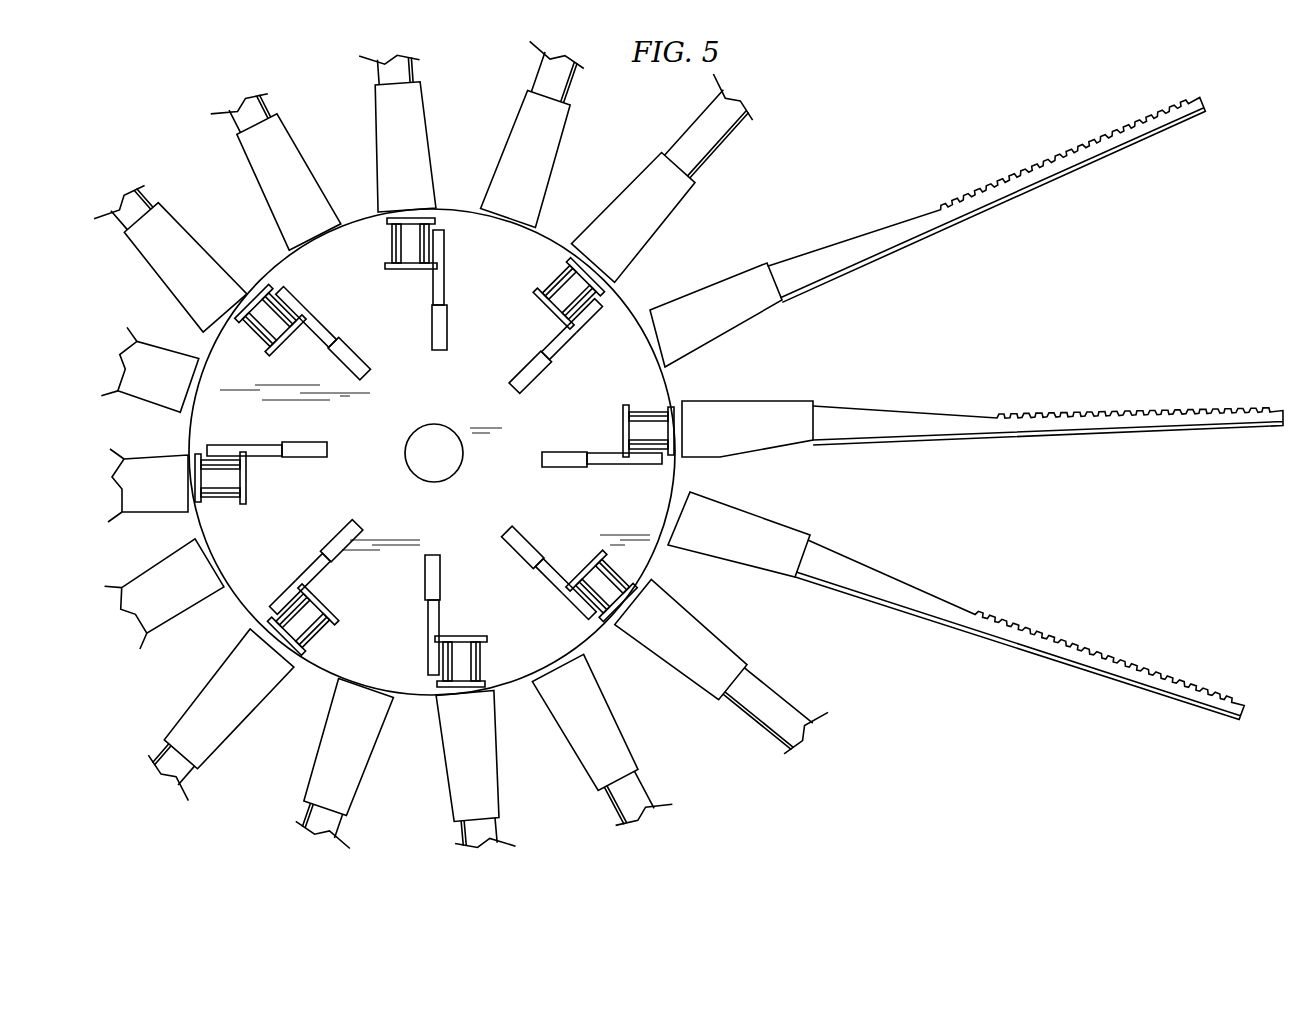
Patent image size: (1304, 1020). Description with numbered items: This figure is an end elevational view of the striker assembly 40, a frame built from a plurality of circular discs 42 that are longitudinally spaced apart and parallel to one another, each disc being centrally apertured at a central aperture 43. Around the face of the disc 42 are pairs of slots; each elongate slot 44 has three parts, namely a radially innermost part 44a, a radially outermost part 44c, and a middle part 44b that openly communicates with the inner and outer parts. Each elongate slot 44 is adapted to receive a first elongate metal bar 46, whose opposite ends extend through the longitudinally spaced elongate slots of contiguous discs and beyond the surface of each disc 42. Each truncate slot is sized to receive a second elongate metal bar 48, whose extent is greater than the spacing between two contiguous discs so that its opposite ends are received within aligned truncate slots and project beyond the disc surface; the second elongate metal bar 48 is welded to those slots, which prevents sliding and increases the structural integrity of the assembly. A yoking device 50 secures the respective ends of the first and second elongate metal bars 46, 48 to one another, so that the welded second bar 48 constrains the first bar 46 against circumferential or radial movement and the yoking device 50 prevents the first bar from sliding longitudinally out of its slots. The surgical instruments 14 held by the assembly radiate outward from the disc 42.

The striker assembly 40 is at (813, 129).
The surgical instrument 14 is at (175, 381).
The circular disc 42 is at (415, 408).
The central aperture 43 is at (440, 475).
The elongate slot 44 is at (534, 318).
The radially innermost part of elongate slot 44a is at (355, 348).
The middle part of elongate slot 44b is at (565, 355).
The radially outermost part of elongate slot 44c is at (447, 248).
The first elongate metal bar 46 is at (434, 452).
The second elongate metal bar 48 is at (388, 244).
The yoking device 50 is at (407, 264).